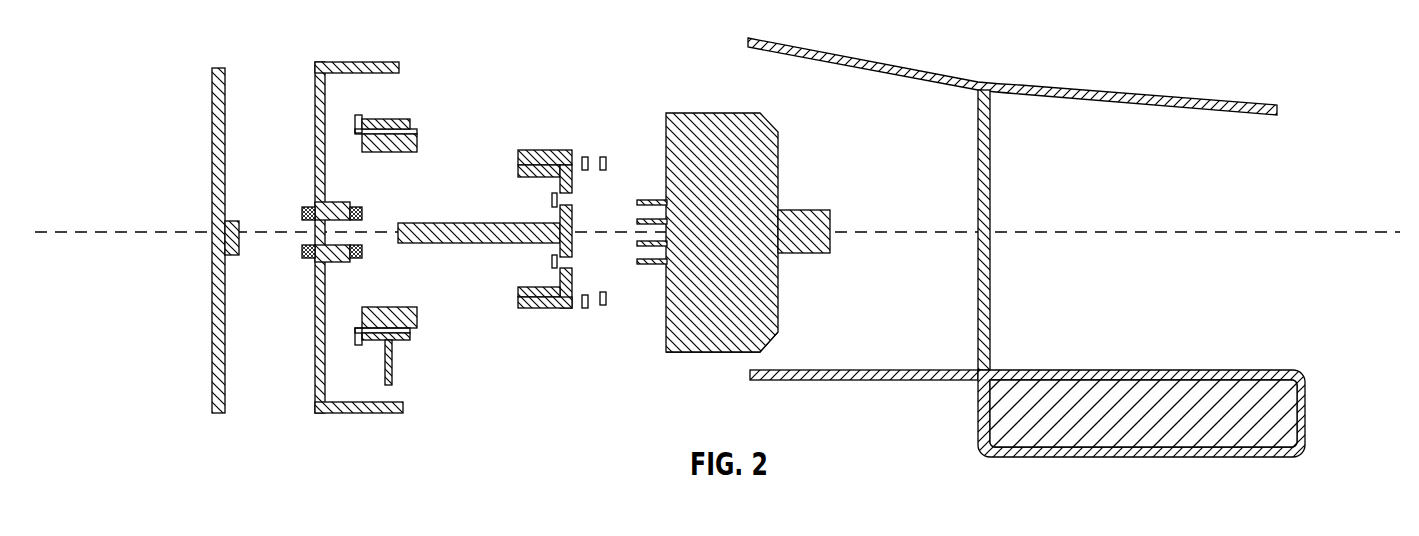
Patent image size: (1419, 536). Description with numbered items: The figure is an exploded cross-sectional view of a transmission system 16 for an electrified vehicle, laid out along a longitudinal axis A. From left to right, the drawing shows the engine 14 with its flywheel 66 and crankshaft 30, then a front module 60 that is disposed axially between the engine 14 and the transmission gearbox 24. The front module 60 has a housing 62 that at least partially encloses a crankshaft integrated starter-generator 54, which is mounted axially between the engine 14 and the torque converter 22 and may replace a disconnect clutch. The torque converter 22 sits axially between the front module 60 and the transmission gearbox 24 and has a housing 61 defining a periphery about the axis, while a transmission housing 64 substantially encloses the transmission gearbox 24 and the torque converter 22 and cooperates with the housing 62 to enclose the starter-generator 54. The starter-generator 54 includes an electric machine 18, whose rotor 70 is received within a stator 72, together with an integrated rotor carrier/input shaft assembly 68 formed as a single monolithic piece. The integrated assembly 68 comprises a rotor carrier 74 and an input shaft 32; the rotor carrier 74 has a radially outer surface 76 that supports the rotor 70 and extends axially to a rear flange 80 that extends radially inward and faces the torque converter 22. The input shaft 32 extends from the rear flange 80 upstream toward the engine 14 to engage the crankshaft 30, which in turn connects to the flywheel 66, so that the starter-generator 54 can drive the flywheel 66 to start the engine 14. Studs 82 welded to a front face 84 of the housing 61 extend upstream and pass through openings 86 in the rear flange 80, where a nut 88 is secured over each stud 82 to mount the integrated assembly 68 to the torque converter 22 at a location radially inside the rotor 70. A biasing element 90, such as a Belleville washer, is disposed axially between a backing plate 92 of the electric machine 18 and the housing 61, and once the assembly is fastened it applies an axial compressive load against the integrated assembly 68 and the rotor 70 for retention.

The engine 14 is at (164, 204).
The transmission system 16 is at (866, 42).
The electric machine 18 is at (417, 95).
The torque converter 22 is at (752, 213).
The transmission gearbox 24 is at (1172, 118).
The crankshaft 30 is at (232, 258).
The input shaft 32 is at (478, 252).
The crankshaft integrated starter-generator 54 is at (429, 211).
The front module 60 is at (320, 220).
The housing 61 is at (712, 113).
The housing 62 is at (318, 63).
The transmission housing 64 is at (1045, 85).
The flywheel 66 is at (225, 165).
The integrated rotor carrier/input shaft assembly 68 is at (473, 252).
The rotor 70 is at (540, 158).
The stator 72 is at (415, 140).
The rotor carrier 74 is at (563, 160).
The radially outer surface 76 is at (535, 160).
The rear flange 80 is at (568, 133).
The studs 82 is at (648, 263).
The front face 84 is at (667, 335).
The openings 86 is at (575, 252).
The nut 88 is at (550, 200).
The biasing element 90 is at (607, 163).
The backing plate 92 is at (585, 312).